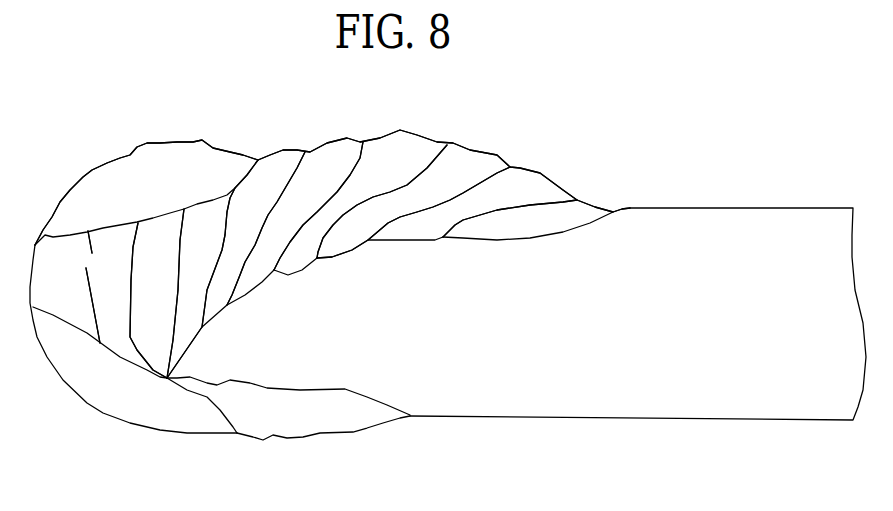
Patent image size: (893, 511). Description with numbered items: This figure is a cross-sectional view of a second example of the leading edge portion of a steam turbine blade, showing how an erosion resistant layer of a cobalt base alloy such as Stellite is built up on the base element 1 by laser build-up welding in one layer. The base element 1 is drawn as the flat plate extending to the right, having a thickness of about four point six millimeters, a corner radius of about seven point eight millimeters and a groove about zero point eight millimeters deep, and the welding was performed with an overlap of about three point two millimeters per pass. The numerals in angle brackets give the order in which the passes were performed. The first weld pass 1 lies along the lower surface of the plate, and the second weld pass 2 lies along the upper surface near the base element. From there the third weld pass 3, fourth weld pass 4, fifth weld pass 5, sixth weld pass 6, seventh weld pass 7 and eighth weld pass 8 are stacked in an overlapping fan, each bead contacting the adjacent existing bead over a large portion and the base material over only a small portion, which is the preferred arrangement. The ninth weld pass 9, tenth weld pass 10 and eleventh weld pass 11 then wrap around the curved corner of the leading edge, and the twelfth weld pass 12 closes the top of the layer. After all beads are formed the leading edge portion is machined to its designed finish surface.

The base element 1 is at (592, 394).
The second weld pass 2 is at (528, 220).
The third weld pass 3 is at (447, 212).
The fourth weld pass 4 is at (413, 201).
The fifth weld pass 5 is at (360, 208).
The sixth weld pass 6 is at (282, 234).
The seventh weld pass 7 is at (236, 265).
The eighth weld pass 8 is at (212, 269).
The ninth weld pass 9 is at (157, 293).
The tenth weld pass 10 is at (126, 300).
The eleventh weld pass 11 is at (133, 332).
The twelfth weld pass 12 is at (332, 187).